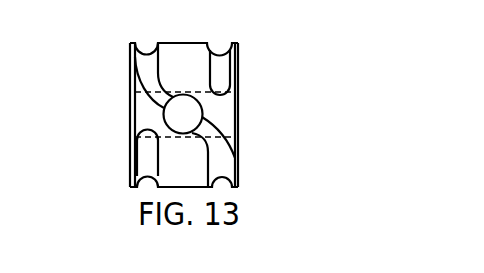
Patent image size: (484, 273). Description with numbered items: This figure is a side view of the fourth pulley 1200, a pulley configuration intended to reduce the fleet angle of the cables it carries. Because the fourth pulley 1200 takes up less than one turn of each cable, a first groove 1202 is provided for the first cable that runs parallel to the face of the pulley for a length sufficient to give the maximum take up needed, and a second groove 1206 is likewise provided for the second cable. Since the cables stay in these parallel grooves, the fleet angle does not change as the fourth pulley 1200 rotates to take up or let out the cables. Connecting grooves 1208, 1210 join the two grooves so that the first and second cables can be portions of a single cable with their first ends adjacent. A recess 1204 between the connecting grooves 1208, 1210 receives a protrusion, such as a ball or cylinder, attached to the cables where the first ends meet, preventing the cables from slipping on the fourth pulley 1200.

The fourth pulley 1200 is at (131, 43).
The first groove 1202 is at (222, 86).
The recess 1204 is at (207, 115).
The second groove 1206 is at (150, 143).
The connecting groove 1208 is at (162, 97).
The connecting groove 1210 is at (187, 119).